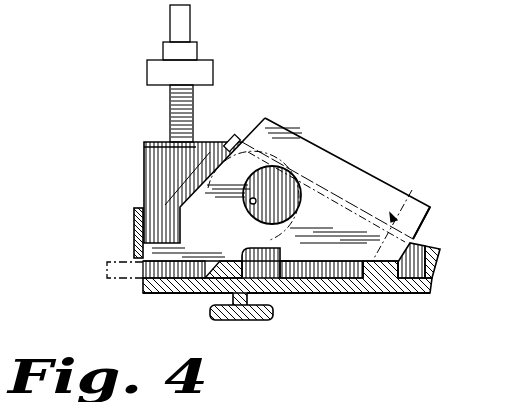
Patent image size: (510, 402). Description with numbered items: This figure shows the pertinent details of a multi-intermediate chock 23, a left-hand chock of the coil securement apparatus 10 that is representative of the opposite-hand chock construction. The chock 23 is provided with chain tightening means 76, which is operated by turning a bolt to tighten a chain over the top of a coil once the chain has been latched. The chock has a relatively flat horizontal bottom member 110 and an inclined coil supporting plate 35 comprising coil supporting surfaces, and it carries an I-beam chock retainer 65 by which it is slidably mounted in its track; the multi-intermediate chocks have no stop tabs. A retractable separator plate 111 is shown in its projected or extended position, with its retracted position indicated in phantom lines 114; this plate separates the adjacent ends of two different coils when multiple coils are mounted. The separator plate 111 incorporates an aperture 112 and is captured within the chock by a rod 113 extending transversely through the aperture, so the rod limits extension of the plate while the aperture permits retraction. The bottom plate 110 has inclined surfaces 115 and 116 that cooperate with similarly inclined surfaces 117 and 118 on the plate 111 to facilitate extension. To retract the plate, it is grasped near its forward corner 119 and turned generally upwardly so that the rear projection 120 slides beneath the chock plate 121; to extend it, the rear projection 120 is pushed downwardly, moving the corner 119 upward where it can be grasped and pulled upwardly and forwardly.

The apparatus 10 is at (315, 5).
The multi-intermediate chock 23 is at (414, 87).
The inclined coil supporting plate 35 is at (434, 189).
The I-beam chock retainer 65 is at (250, 322).
The chain tightening means 76 is at (118, 91).
The bottom member 110 is at (347, 294).
The retractable separator plate 111 is at (343, 164).
The aperture 112 is at (287, 172).
The rod 113 is at (256, 204).
The phantom lines 114 is at (208, 152).
The inclined surface 115 is at (200, 264).
The inclined surface 116 is at (375, 294).
The inclined surface 117 is at (252, 241).
The inclined surface 118 is at (424, 231).
The forward corner 119 is at (433, 206).
The rear projection 120 is at (133, 253).
The chock plate 121 is at (133, 228).